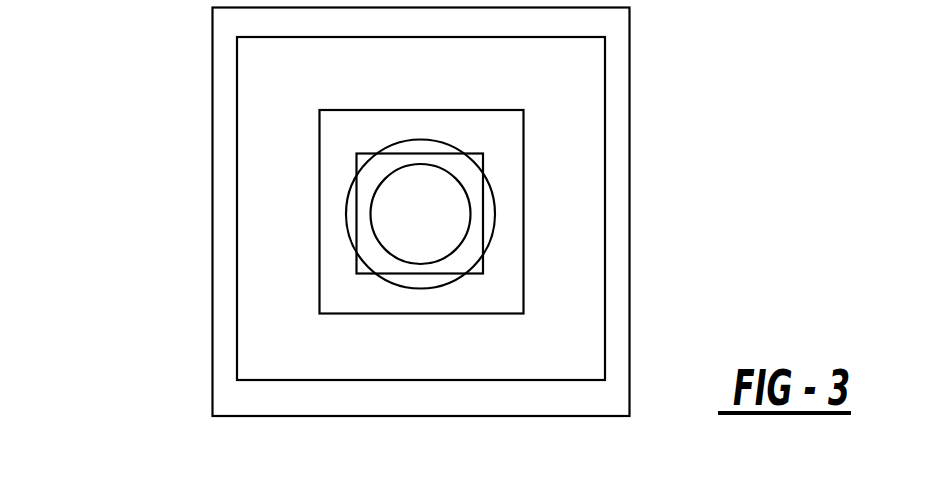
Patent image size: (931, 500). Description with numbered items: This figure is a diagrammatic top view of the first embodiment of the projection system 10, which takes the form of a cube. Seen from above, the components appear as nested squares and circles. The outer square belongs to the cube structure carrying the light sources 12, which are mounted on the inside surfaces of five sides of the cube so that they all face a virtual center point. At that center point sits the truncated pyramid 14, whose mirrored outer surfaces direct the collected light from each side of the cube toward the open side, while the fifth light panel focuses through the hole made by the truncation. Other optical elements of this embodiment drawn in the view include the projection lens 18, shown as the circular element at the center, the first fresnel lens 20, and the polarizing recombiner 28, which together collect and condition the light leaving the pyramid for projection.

The projection system 10 is at (381, 246).
The light source 12 is at (211, 372).
The truncated pyramid 14 is at (343, 302).
The projection lens 18 is at (437, 262).
The first fresnel lens 20 is at (603, 292).
The polarizing recombiner 28 is at (357, 271).